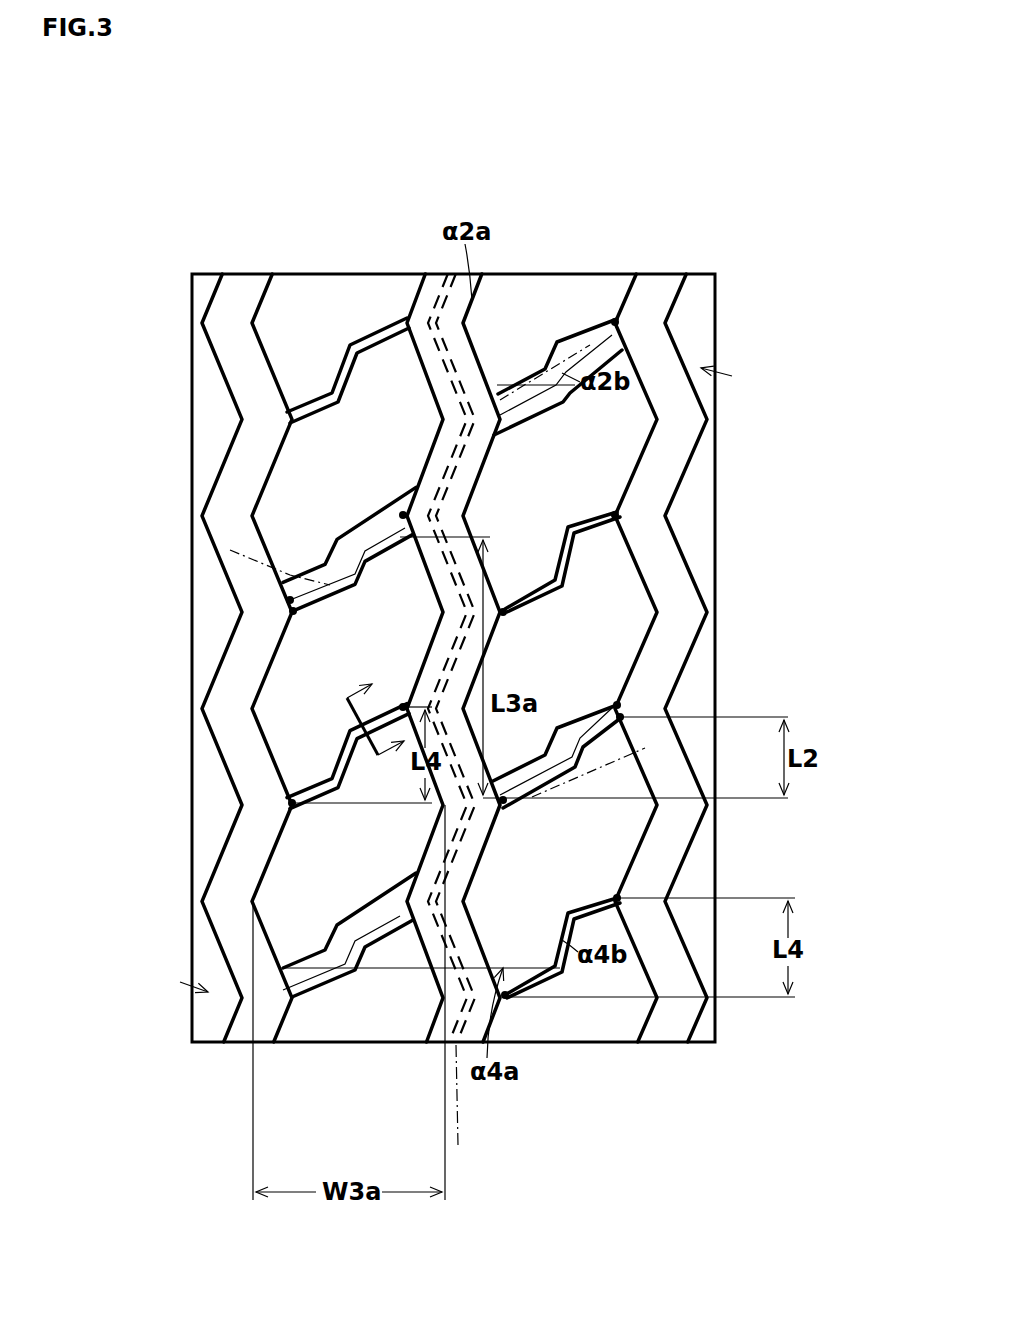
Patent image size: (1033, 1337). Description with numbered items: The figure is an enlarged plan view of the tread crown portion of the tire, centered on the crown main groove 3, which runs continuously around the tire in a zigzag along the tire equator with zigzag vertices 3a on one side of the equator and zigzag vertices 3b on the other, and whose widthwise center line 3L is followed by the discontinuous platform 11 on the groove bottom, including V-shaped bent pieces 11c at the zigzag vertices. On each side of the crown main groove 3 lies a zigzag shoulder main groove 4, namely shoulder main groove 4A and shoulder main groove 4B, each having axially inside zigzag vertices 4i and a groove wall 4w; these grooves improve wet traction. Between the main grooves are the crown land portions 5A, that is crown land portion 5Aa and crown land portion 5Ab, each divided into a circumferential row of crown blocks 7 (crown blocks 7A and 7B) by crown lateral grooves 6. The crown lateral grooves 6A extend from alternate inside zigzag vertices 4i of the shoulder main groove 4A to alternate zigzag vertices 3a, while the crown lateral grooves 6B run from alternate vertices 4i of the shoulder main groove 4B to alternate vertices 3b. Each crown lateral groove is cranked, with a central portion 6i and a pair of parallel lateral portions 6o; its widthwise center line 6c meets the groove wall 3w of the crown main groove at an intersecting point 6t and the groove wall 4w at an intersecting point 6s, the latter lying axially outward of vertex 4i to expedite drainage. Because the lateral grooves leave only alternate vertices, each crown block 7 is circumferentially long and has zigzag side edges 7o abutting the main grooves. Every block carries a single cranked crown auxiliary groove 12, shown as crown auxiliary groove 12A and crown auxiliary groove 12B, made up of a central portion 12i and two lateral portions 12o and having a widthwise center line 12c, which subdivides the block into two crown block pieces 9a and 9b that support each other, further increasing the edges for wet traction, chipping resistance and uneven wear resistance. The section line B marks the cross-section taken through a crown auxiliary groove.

The crown main groove 3 is at (455, 652).
The zigzag vertices of the crown main groove 3a is at (500, 447).
The zigzag vertices of the crown main groove 3b is at (403, 505).
The groove wall of the crown main groove 3w is at (540, 805).
The widthwise center line of the crown main groove 3L is at (463, 1108).
The shoulder main groove 4 is at (456, 609).
The shoulder main groove 4A is at (663, 283).
The shoulder main groove 4B is at (230, 292).
The axially inside zigzag vertices of the shoulder main groove 4i is at (619, 324).
The groove wall of the shoulder main groove 4w is at (290, 600).
The crown land portion 5A is at (498, 215).
The crown land portion 5Aa is at (618, 287).
The crown land portion 5Ab is at (362, 290).
The crown lateral groove 6 is at (458, 631).
The crown lateral groove 6A is at (615, 220).
The crown lateral groove 6B is at (340, 592).
The widthwise center line of the crown lateral groove 6c is at (330, 560).
The central portion of the crown lateral groove 6i is at (557, 358).
The lateral portion of the crown lateral groove 6o is at (503, 375).
The intersecting point 6s is at (293, 612).
The intersecting point 6t is at (575, 720).
The crown block 7 is at (458, 654).
The crown block 7A is at (776, 478).
The crown block 7B is at (300, 462).
The zigzag side edges of the crown block 7o is at (297, 290).
The crown block piece 9a is at (590, 487).
The crown block piece 9b is at (592, 543).
The platform 11 is at (411, 714).
The V-shaped bent pieces 11c is at (435, 1012).
The crown auxiliary groove 12 is at (459, 766).
The crown auxiliary groove 12A is at (565, 580).
The crown auxiliary groove 12B is at (333, 385).
The widthwise center line of the crown auxiliary groove 12c is at (345, 757).
The central portion of the crown auxiliary groove 12i is at (570, 970).
The lateral portion of the crown auxiliary groove 12o is at (530, 998).
The section line B- B is at (377, 713).